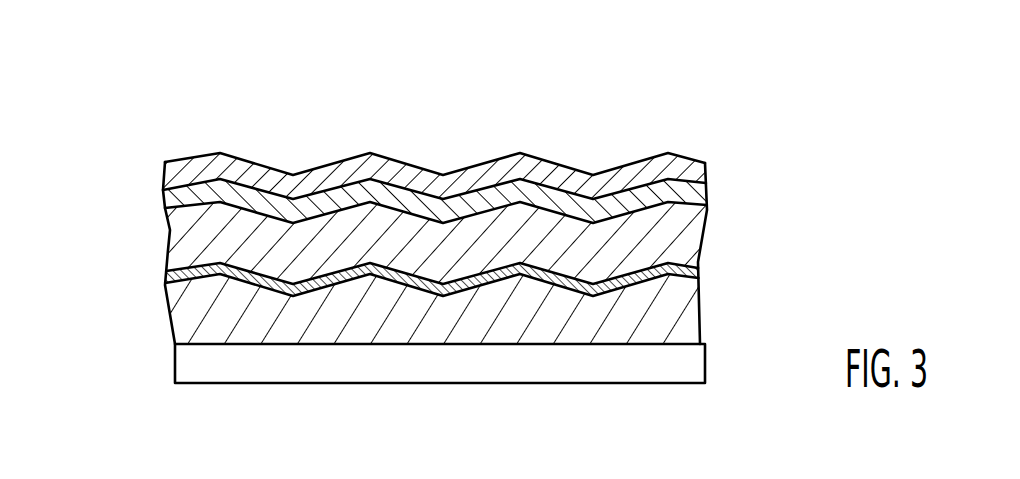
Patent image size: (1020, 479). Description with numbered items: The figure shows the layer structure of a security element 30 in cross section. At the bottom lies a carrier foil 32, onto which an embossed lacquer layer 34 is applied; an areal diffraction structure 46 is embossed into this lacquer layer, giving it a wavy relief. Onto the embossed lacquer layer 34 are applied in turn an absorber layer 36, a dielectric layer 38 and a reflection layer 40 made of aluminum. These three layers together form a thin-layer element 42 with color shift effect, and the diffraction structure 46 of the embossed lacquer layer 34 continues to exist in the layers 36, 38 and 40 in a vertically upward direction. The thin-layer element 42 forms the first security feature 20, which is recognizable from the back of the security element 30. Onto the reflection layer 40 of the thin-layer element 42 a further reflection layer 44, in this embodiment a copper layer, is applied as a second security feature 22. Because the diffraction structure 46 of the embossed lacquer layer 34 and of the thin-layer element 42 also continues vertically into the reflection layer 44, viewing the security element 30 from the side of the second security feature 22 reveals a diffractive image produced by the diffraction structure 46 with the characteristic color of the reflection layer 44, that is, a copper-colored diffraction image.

The security element 30 is at (113, 130).
The second security feature 22 is at (141, 157).
The first security feature 20 is at (143, 195).
The thin-layer element 42 is at (785, 183).
The reflection layer 44 is at (705, 163).
The reflection layer 40 is at (705, 197).
The dielectric layer 38 is at (705, 234).
The absorber layer 36 is at (705, 275).
The embossed lacquer layer 34 is at (697, 314).
The carrier foil 32 is at (706, 361).
The diffraction structure 46 is at (478, 282).